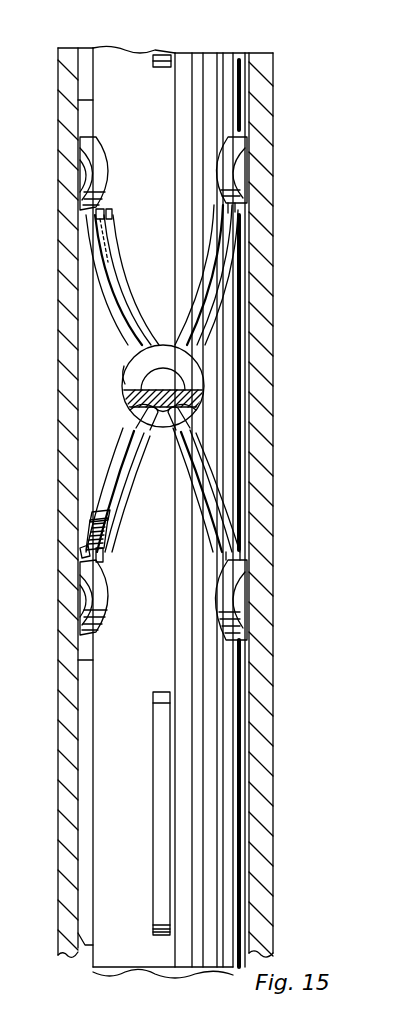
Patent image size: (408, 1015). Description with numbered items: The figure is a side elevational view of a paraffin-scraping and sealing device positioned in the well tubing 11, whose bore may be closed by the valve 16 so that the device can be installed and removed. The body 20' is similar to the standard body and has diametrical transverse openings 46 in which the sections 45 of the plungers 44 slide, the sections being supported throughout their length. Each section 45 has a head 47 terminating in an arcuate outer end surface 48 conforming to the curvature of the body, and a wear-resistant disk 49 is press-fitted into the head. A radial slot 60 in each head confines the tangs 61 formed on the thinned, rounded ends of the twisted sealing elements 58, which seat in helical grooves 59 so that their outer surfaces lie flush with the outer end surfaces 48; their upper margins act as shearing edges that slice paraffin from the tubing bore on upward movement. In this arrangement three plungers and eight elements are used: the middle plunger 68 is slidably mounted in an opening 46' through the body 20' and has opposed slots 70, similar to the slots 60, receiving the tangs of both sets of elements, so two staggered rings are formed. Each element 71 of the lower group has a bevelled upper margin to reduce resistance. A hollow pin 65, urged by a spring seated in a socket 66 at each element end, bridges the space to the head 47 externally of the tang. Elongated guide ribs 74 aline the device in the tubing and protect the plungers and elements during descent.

The well tubing 11 is at (271, 78).
The body 20' is at (129, 512).
The transverse opening 46 is at (110, 173).
The disk 49 is at (82, 176).
The plunger 44 is at (245, 160).
The tang 61 is at (104, 215).
The sealing element 58 is at (108, 258).
The groove 59 is at (187, 327).
The opening 46' is at (74, 365).
The middle plunger 68 is at (195, 371).
The slot 70 is at (200, 406).
The valve 16 is at (102, 452).
The element of the lower group 71 is at (116, 494).
The socket 66 is at (88, 528).
The pin 65 is at (82, 548).
The slot 60 is at (100, 560).
The head 47 is at (108, 596).
The outer end surface 48 is at (82, 622).
The plunger section 45 is at (220, 598).
The elongated guide rib 74 is at (153, 853).